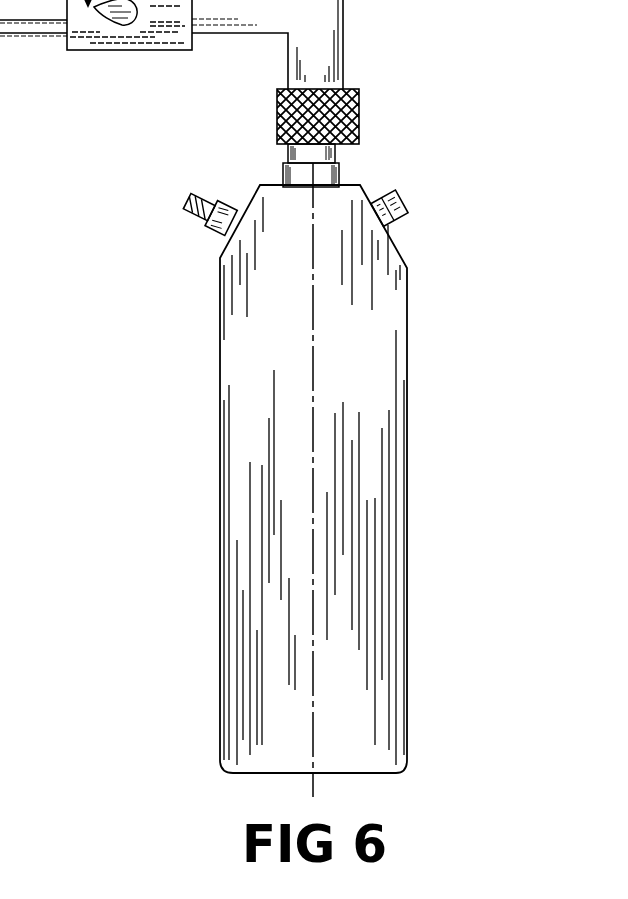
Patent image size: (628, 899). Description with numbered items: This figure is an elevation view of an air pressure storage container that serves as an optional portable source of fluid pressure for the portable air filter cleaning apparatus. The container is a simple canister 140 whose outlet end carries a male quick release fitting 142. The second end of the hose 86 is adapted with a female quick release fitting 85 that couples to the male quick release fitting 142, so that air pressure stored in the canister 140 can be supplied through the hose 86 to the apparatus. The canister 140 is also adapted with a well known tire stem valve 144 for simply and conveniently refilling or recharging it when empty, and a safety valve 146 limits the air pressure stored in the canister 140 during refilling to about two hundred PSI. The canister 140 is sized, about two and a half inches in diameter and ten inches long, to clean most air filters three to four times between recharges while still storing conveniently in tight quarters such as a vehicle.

The female quick release fitting 85 is at (360, 118).
The hose 86 is at (0, 64).
The canister 140 is at (222, 549).
The male quick release fitting 142 is at (337, 157).
The tire stem valve 144 is at (205, 228).
The safety valve 146 is at (397, 215).